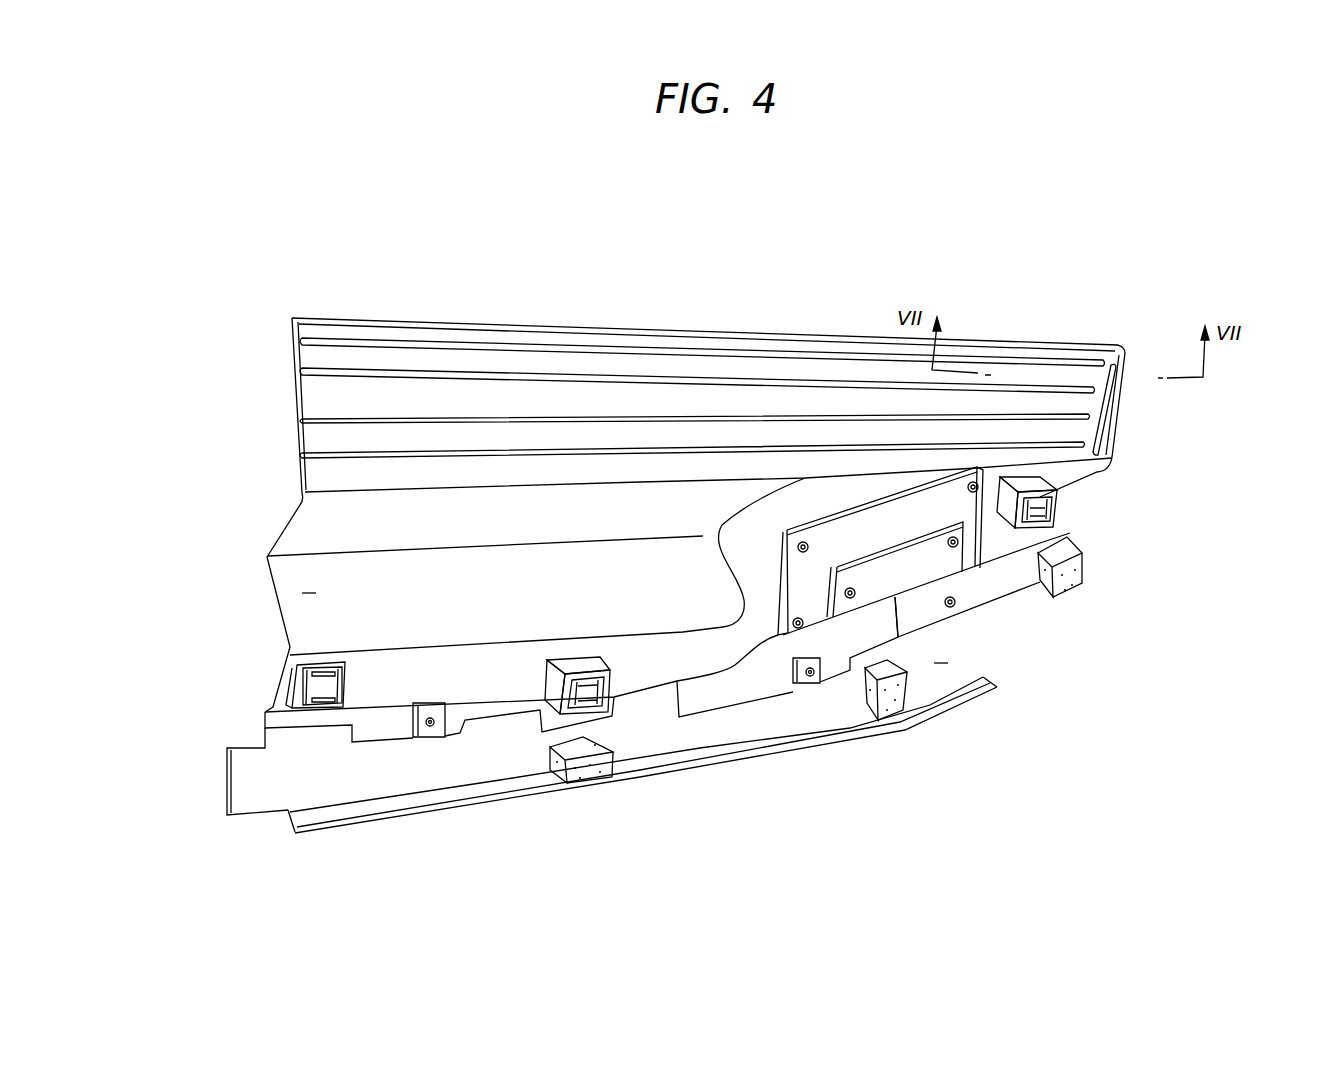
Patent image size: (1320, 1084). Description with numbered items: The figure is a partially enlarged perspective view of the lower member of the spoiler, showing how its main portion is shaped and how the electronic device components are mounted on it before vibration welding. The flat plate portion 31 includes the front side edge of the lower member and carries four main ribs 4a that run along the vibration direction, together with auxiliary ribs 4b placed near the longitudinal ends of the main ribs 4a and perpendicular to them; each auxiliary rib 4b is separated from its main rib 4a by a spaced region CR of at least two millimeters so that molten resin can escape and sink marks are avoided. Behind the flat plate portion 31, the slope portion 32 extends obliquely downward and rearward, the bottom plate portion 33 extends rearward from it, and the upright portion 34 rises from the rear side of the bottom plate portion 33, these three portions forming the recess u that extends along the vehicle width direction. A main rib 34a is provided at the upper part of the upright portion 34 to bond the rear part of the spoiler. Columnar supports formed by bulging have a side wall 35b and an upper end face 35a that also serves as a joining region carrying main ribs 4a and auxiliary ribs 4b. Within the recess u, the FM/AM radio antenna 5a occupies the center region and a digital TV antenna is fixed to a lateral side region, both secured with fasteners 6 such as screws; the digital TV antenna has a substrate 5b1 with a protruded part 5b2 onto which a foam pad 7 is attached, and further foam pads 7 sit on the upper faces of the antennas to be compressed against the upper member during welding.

The flat plate portion 31 is at (690, 393).
The main ribs 4a is at (373, 450).
The auxiliary ribs 4b is at (1112, 414).
The spaced region CR is at (1110, 350).
The substrate 5b1 is at (853, 527).
The protruded part 5b2 is at (992, 590).
The FM/AM radio antenna 5a is at (253, 790).
The fasteners 6 is at (810, 540).
The foam pads 7 is at (1068, 585).
The upper end face 35a is at (1047, 523).
The side wall 35b is at (1042, 490).
The slope portion 32 is at (497, 682).
The bottom plate portion 33 is at (992, 627).
The upright portion 34 is at (950, 703).
The main rib 34a is at (700, 777).
The recess u is at (625, 620).